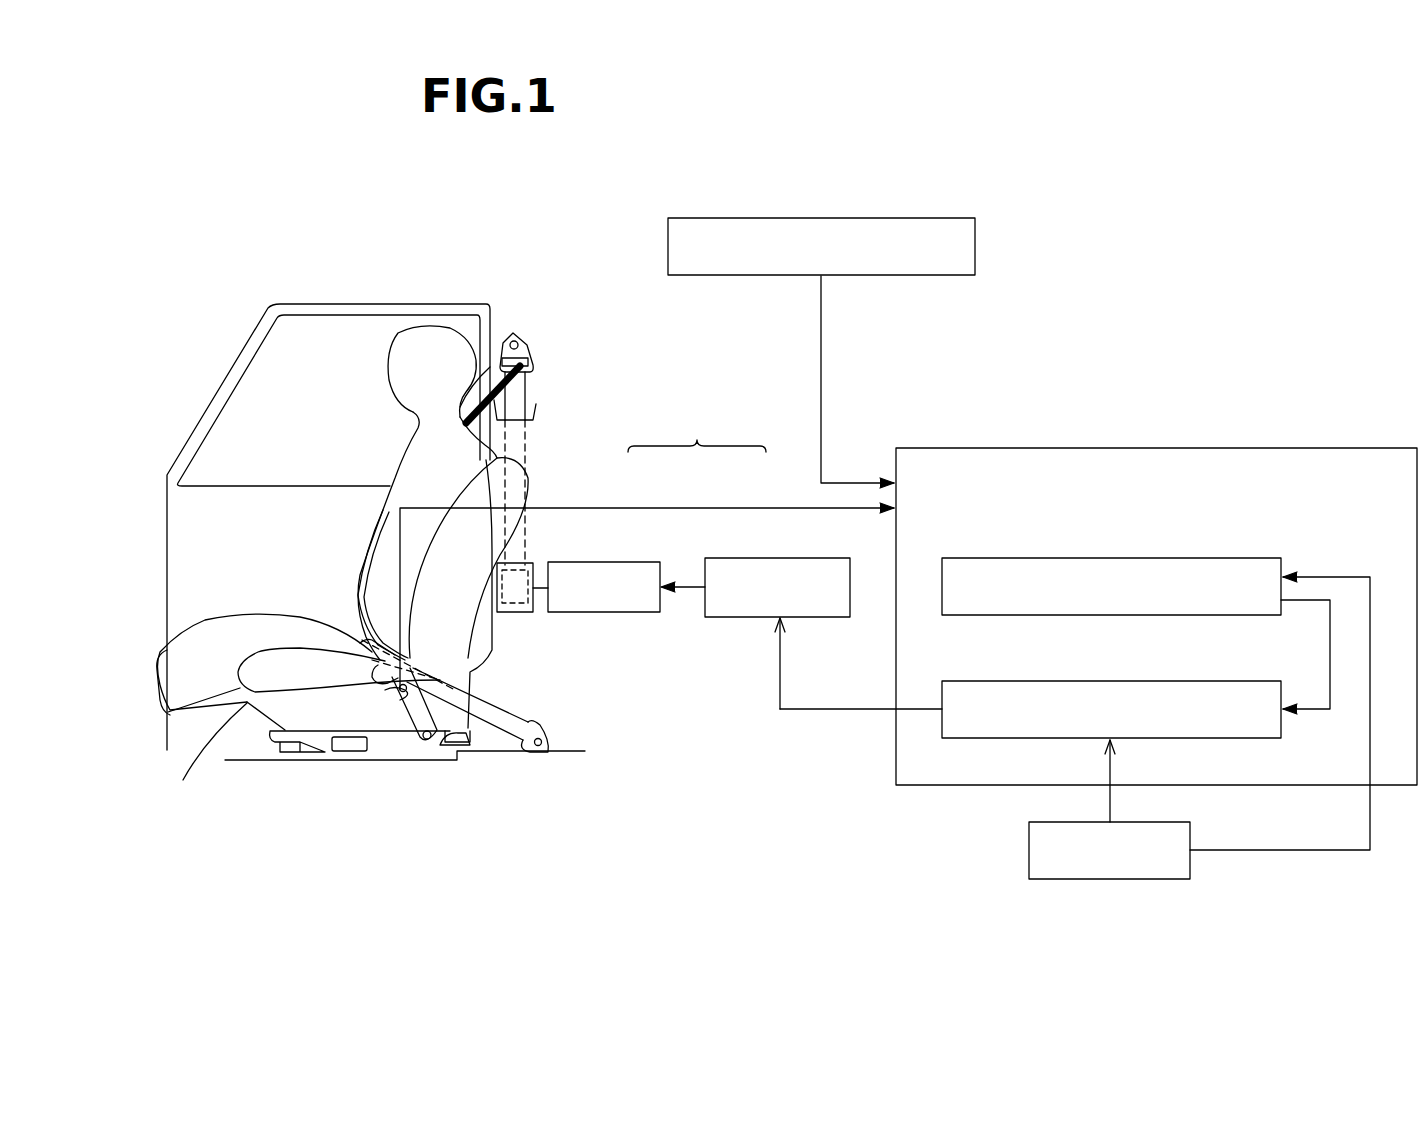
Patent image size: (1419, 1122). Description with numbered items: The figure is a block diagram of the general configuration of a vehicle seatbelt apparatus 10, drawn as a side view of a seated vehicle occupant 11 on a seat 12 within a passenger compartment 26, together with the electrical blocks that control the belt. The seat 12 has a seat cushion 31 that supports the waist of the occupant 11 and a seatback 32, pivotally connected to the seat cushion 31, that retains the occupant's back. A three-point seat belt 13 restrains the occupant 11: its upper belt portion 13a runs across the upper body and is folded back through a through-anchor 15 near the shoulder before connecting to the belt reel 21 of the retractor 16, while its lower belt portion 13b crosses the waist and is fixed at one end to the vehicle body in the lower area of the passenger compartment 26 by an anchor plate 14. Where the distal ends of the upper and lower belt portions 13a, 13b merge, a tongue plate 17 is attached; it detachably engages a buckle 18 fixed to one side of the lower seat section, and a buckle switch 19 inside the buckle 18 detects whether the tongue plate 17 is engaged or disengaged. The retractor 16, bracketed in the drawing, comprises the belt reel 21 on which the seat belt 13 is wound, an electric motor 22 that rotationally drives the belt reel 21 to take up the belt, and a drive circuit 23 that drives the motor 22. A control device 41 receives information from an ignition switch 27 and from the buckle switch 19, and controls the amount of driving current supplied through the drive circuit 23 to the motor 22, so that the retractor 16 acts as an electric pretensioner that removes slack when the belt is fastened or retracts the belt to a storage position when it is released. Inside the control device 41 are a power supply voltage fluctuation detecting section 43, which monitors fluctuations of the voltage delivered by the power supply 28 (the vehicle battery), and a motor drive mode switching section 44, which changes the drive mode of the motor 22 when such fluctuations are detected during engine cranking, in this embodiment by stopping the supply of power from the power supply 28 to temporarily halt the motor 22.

The vehicle seatbelt apparatus 10 is at (280, 165).
The vehicle occupant 11 is at (418, 476).
The seat 12 is at (300, 640).
The seat belt 13 is at (348, 588).
The upper belt portion 13a is at (513, 400).
The lower belt portion 13b is at (480, 696).
The anchor plate 14 is at (545, 738).
The through-anchor 15 is at (523, 356).
The retractor 16 is at (697, 431).
The tongue plate 17 is at (202, 759).
The buckle 18 is at (405, 703).
The buckle switch 19 is at (405, 677).
The belt reel 21 is at (520, 568).
The electric motor 22 is at (622, 562).
The drive circuit 23 is at (727, 558).
The passenger compartment 26 is at (280, 403).
The ignition switch 27 is at (905, 218).
The power supply 28 is at (1058, 880).
The seat cushion 31 is at (288, 650).
The seatback 32 is at (495, 485).
The control device 41 is at (988, 445).
The power supply voltage fluctuation detecting section 43 is at (1210, 558).
The motor drive mode switching section 44 is at (1210, 681).